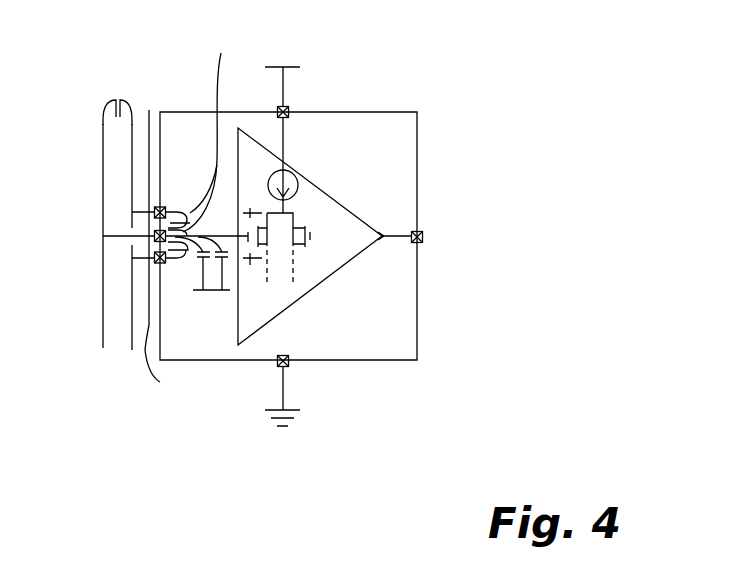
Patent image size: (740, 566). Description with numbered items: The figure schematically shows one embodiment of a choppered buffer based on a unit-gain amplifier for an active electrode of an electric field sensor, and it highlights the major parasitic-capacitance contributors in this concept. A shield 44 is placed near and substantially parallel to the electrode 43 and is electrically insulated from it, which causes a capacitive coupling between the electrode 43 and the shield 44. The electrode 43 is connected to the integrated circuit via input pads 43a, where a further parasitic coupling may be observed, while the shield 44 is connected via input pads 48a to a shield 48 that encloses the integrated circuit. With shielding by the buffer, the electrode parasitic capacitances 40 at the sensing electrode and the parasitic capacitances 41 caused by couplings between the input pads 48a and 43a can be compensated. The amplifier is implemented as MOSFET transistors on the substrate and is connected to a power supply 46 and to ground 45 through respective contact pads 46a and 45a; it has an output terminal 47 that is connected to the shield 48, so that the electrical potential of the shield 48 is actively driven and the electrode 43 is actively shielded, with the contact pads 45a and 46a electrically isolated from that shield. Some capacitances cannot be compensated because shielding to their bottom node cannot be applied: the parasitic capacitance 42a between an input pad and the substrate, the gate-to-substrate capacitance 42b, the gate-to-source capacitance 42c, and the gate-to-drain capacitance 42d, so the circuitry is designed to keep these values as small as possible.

The electrode parasitic capacitances 40 is at (120, 97).
The parasitic capacitances 41 is at (209, 131).
The parasitic capacitance 42a is at (195, 258).
The gate-to-substrate capacitance 42b is at (228, 257).
The gate-to-source capacitance 42c is at (258, 199).
The gate-to-drain capacitance 42d is at (248, 270).
The electrode 43 is at (102, 350).
The input pads 43a is at (149, 120).
The shield 44 is at (127, 350).
The ground 45 is at (297, 407).
The contact pad 45a is at (293, 372).
The power supply 46 is at (301, 72).
The contact pad 46a is at (288, 102).
The output terminal 47 is at (438, 240).
The shield 48 is at (422, 314).
The input pads 48a is at (162, 206).